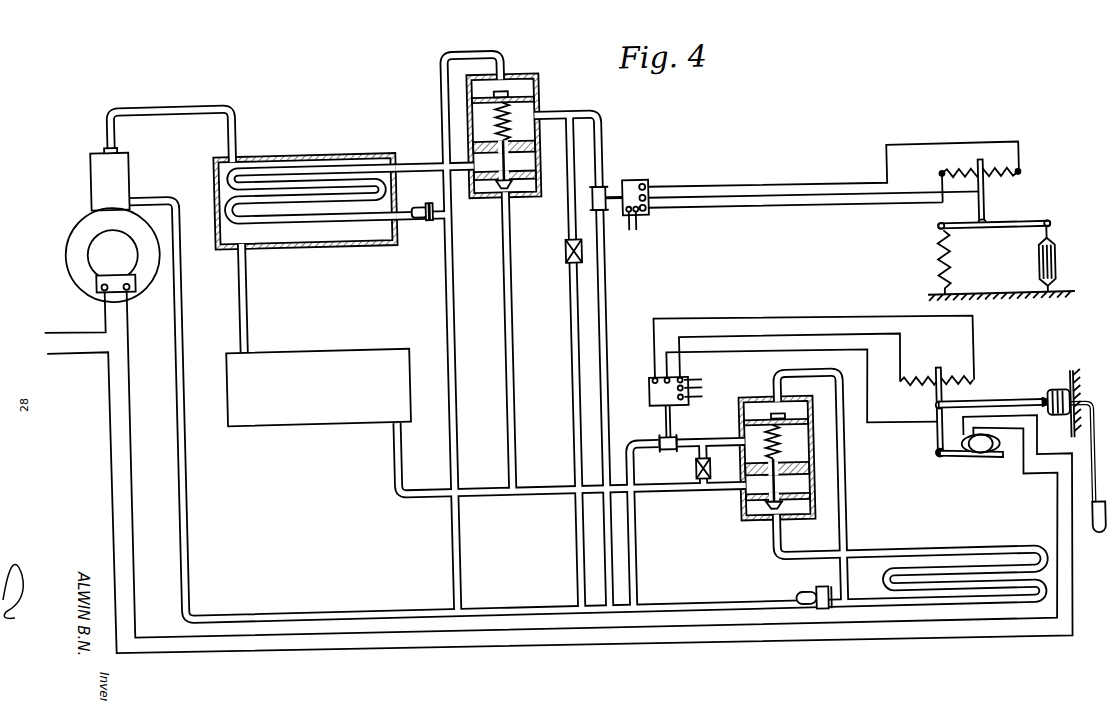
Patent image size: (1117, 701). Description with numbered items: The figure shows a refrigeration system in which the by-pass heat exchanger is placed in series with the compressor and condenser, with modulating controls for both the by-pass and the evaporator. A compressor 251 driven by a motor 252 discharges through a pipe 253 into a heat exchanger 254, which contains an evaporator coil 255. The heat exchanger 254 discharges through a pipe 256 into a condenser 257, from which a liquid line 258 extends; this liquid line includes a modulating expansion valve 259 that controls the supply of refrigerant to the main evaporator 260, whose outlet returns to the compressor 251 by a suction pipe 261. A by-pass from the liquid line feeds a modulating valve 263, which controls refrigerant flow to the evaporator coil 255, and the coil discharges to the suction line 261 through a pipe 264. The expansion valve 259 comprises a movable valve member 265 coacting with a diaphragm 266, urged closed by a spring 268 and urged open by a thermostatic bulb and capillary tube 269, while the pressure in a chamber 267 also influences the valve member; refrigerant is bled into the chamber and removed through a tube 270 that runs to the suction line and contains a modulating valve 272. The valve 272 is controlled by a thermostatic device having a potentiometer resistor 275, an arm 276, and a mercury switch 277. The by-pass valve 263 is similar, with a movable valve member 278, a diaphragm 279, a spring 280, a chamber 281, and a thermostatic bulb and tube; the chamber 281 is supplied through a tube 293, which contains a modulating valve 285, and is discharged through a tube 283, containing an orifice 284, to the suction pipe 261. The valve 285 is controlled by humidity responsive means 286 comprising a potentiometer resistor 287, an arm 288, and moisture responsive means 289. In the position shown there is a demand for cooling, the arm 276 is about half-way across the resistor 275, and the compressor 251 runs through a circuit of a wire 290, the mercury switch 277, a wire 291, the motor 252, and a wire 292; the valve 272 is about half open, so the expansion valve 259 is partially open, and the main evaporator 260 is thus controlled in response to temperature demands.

The compressor 251 is at (118, 162).
The motor 252 is at (103, 229).
The pipe 253 is at (185, 97).
The heat exchanger 254 is at (332, 150).
The evaporator coil 255 is at (315, 217).
The pipe 256 is at (262, 298).
The condenser 257 is at (339, 419).
The liquid line 258 is at (540, 496).
The modulating expansion valve 259 is at (737, 530).
The evaporator 260 is at (954, 565).
The suction pipe 261 is at (389, 601).
The modulating valve 263 is at (548, 78).
The pipe 264 is at (444, 294).
The movable valve member 265 is at (778, 490).
The diaphragm 266 is at (793, 403).
The chamber 267 is at (799, 443).
The spring 268 is at (790, 451).
The thermostatic bulb and capillary tube 269 is at (798, 601).
The tube 270 is at (630, 531).
The modulating valve 272 is at (653, 392).
The potentiometer resistor 275 is at (921, 388).
The arm 276 is at (936, 407).
The mercury switch 277 is at (983, 466).
The movable valve member 278 is at (470, 161).
The diaphragm 279 is at (530, 95).
The spring 280 is at (519, 121).
The chamber 281 is at (487, 115).
The tube 283 is at (573, 320).
The orifice 284 is at (568, 262).
The modulating valve 285 is at (645, 184).
The humidity responsive means 286 is at (938, 248).
The potentiometer resistor 287 is at (965, 181).
The arm 288 is at (990, 215).
The moisture responsive means 289 is at (1081, 271).
The wire 290 is at (108, 388).
The wire 291 is at (545, 624).
The wire 292 is at (69, 320).
The tube 293 is at (627, 280).